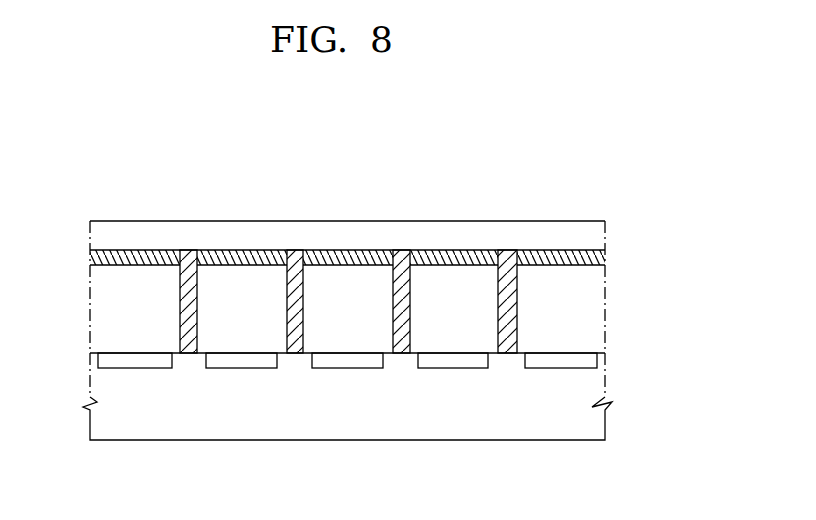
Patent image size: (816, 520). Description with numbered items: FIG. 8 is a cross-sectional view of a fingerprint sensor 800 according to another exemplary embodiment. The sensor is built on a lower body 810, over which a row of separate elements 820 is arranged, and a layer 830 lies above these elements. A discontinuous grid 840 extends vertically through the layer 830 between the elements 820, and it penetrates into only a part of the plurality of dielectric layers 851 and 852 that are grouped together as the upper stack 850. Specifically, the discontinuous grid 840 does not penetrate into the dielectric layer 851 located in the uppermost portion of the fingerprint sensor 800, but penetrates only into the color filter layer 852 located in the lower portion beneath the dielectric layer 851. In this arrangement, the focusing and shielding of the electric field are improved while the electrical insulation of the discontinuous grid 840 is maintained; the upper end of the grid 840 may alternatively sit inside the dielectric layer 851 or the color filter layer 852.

The fingerprint sensor 800 is at (108, 197).
The substrate 810 is at (612, 408).
The connection pads 820 is at (547, 362).
The encapsulant layer 830 is at (598, 296).
The discontinuous grid 840 is at (510, 331).
The upper layer structure 850 is at (682, 220).
The dielectric layer 851 is at (598, 225).
The color filter layer 852 is at (600, 261).